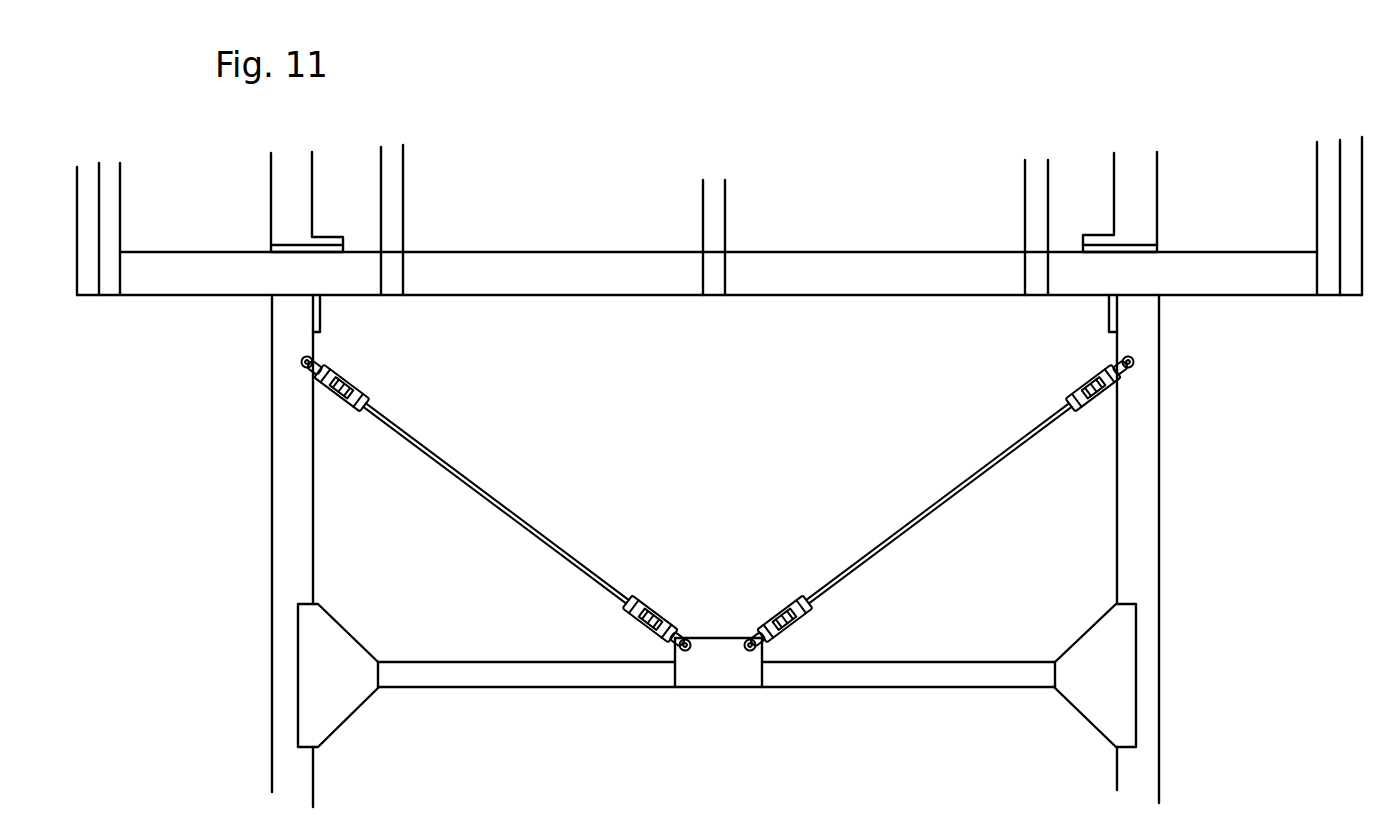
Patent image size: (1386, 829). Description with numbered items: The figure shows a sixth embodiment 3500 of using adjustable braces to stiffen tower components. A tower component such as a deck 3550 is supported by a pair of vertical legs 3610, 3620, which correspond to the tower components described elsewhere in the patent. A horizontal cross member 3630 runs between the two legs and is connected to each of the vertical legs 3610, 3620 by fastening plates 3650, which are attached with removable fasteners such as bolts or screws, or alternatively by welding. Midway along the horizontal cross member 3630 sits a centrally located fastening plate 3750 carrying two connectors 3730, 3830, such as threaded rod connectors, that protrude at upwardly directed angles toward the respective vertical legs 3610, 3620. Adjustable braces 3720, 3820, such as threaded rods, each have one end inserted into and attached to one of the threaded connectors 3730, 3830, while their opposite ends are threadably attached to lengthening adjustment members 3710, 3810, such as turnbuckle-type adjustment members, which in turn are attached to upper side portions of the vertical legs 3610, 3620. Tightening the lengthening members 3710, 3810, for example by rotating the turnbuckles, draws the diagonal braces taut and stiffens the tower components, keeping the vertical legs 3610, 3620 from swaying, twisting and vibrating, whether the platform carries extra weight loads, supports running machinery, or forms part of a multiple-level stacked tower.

The sixth embodiment 3500 is at (907, 143).
The deck 3550 is at (719, 248).
The vertical leg 3610 is at (353, 551).
The vertical leg 3620 is at (1069, 549).
The horizontal cross member 3630 is at (716, 701).
The fastening plate 3650 is at (717, 677).
The lengthening adjustment member 3710 is at (388, 375).
The adjustable brace 3720 is at (500, 503).
The connector 3730 is at (623, 612).
The fastening plate 3750 is at (677, 704).
The lengthening adjustment member 3810 is at (1042, 379).
The adjustable brace 3820 is at (938, 503).
The connector 3830 is at (808, 620).